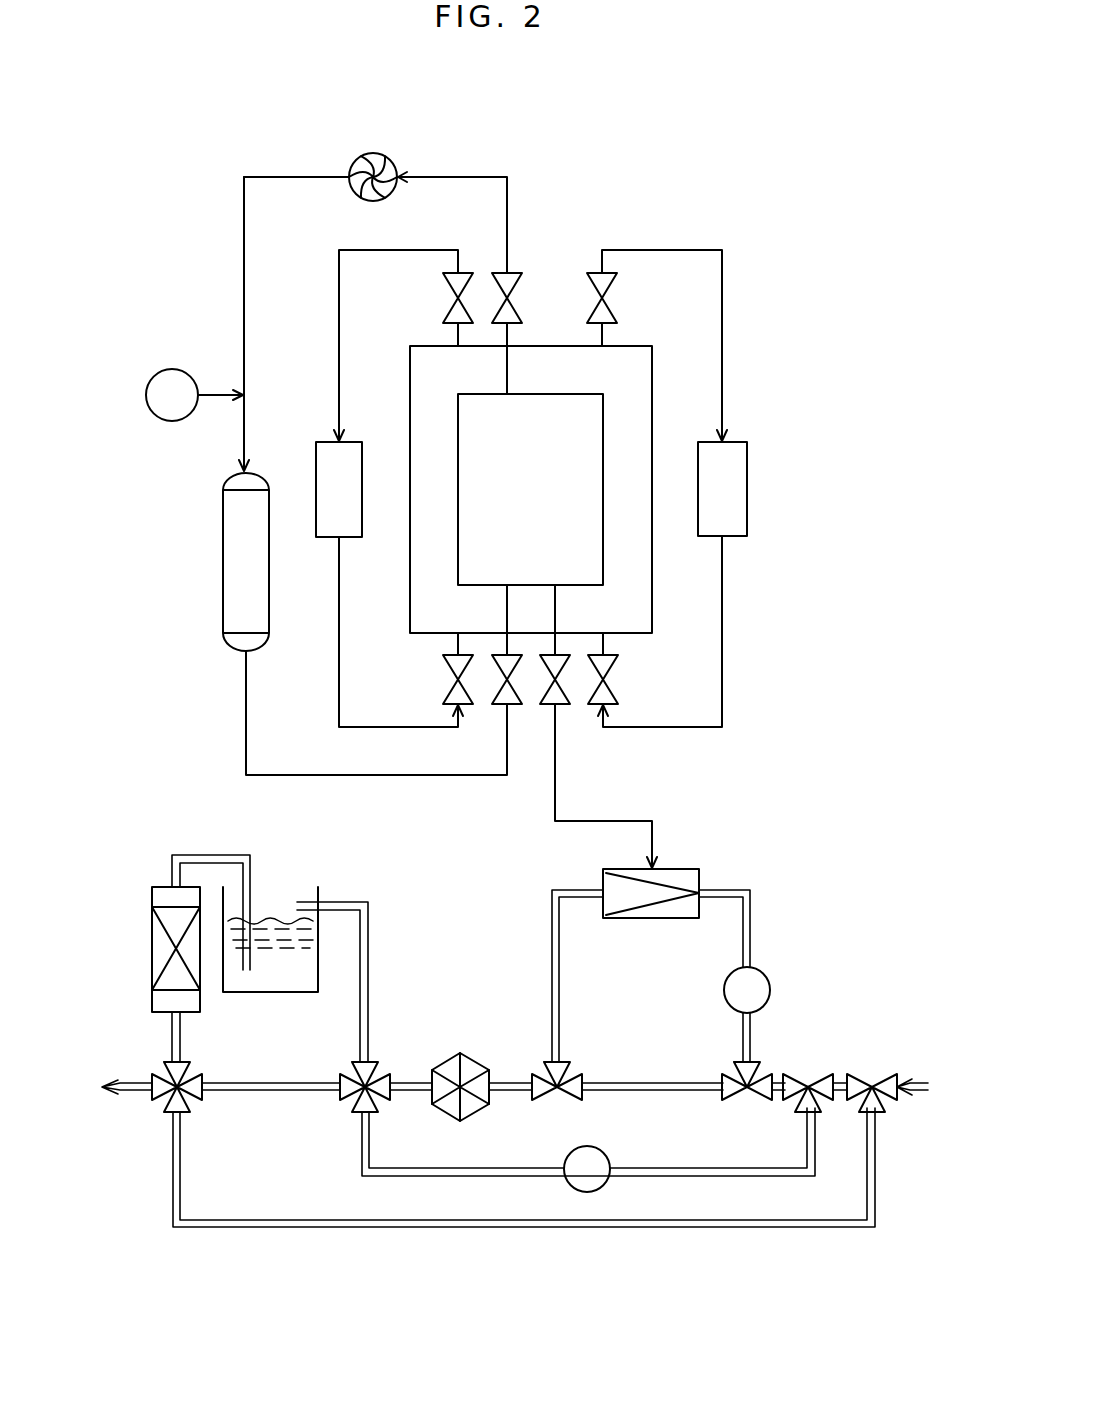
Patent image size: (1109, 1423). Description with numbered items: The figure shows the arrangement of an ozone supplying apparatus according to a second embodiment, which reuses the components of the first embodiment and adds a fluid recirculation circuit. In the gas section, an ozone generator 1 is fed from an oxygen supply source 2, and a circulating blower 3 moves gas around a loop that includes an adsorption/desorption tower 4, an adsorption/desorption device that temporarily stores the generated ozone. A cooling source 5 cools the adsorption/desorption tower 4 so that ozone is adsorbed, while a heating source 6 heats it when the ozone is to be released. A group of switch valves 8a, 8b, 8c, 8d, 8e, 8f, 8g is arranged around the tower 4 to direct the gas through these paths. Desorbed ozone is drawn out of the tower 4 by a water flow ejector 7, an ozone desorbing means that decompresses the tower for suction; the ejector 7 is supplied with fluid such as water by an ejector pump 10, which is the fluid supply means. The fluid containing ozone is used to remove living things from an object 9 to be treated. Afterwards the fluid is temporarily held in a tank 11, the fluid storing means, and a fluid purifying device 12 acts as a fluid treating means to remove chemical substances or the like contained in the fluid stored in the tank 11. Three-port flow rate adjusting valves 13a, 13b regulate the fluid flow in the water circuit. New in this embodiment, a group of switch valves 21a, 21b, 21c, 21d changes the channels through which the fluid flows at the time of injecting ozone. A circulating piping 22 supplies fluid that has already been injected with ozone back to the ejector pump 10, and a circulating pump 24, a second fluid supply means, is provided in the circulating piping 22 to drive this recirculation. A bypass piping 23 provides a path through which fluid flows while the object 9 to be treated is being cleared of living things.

The ozone generator 1 is at (238, 575).
The oxygen supply source 2 is at (165, 382).
The circulating blower 3 is at (365, 157).
The adsorption/desorption tower 4 is at (652, 390).
The cooling source 5 is at (315, 458).
The heating source 6 is at (741, 496).
The water flow ejector 7 is at (688, 873).
The switch valve 8a is at (460, 283).
The switch valve 8b is at (455, 697).
The switch valve 8c is at (510, 283).
The switch valve 8d is at (502, 697).
The switch valve 8e is at (605, 283).
The switch valve 8f is at (558, 697).
The switch valve 8g is at (603, 697).
The object to be treated 9 is at (450, 1070).
The ejector pump 10 is at (760, 977).
The tank 11 is at (320, 940).
The fluid purifying device 12 is at (157, 947).
The three-port flow rate adjusting valve 13a is at (750, 1070).
The three-port flow rate adjusting valve 13b is at (552, 1070).
The switch valve 21a is at (806, 1097).
The switch valve 21b is at (868, 1097).
The switch valve 21c is at (362, 1100).
The switch valve 21d is at (175, 1100).
The circulating piping 22 is at (508, 1172).
The bypass piping 23 is at (425, 1225).
The circulating pump 24 is at (590, 1187).